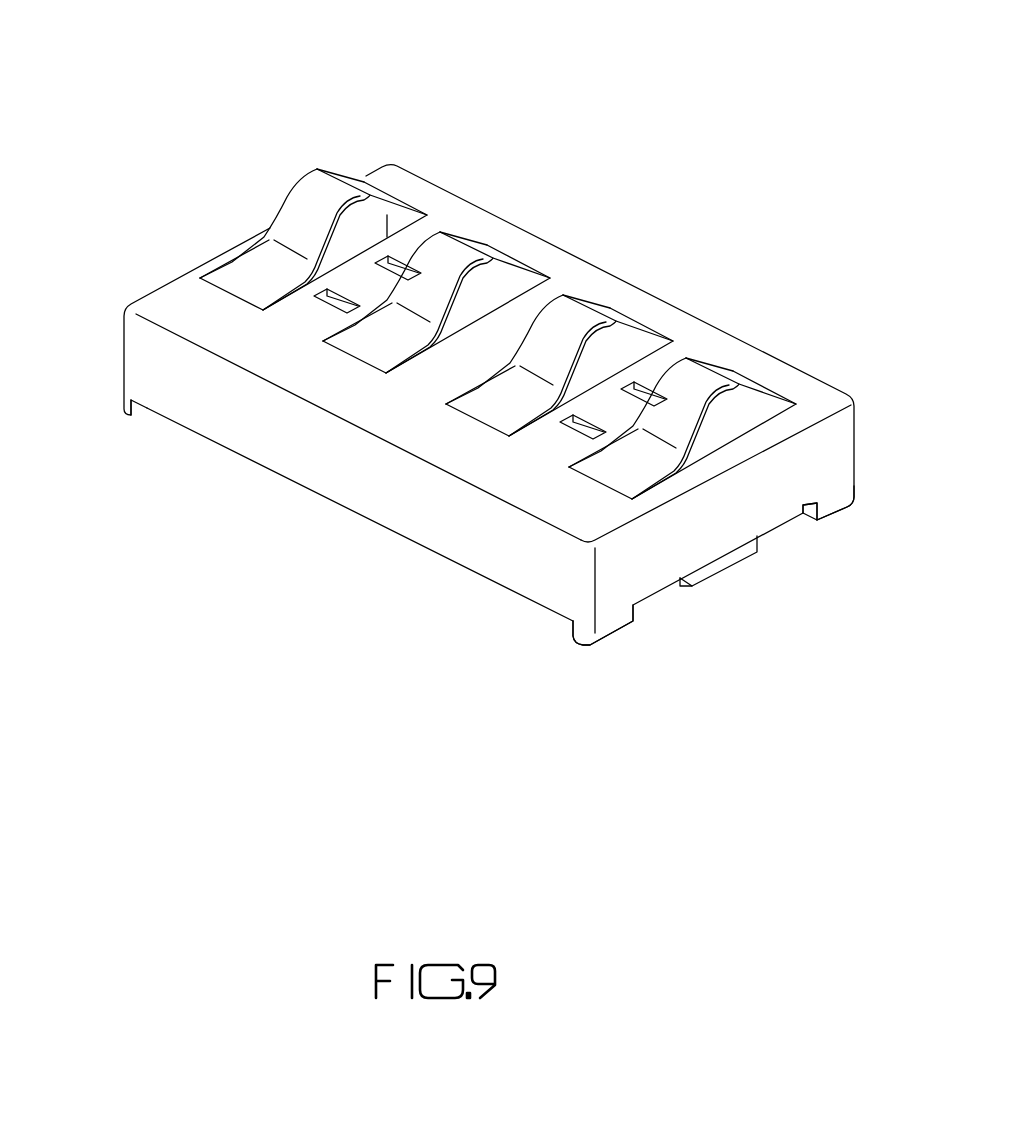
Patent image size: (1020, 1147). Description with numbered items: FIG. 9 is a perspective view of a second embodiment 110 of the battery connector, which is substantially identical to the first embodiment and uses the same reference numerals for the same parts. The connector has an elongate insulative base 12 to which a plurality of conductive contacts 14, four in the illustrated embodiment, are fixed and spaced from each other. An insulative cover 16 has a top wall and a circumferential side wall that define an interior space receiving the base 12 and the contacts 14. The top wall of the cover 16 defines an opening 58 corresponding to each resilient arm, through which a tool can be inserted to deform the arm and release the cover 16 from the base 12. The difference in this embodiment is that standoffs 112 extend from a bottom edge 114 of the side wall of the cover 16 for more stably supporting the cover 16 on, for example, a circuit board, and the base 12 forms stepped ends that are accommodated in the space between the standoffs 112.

The second embodiment of the battery connector 110 is at (347, 119).
The insulative base 12 is at (717, 577).
The conductive contacts 14 is at (253, 278).
The insulative cover 16 is at (616, 267).
The opening 58 is at (395, 270).
The standoffs 112 is at (125, 410).
The bottom edge 114 is at (423, 543).